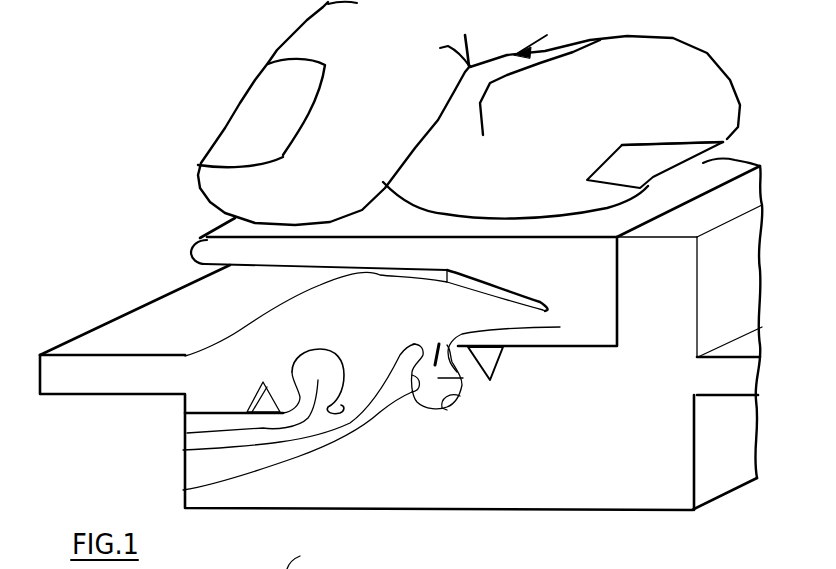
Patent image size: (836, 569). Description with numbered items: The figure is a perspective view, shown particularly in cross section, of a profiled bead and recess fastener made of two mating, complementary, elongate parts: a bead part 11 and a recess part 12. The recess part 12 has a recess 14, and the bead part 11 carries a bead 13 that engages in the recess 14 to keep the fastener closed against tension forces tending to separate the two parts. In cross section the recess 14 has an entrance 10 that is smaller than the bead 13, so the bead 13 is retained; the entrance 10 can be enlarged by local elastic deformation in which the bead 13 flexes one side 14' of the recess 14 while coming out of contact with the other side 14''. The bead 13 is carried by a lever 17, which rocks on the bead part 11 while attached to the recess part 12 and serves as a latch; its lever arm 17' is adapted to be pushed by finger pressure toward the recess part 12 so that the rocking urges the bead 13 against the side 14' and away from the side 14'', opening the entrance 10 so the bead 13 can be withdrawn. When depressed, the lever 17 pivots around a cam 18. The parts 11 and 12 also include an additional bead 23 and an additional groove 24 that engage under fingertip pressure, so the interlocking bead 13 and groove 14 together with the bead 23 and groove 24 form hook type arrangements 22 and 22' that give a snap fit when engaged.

The entrance 10 is at (433, 365).
The bead part 11 is at (295, 313).
The recess part 12 is at (563, 497).
The bead 13 is at (463, 378).
The recess 14 is at (594, 452).
The one side of the recess 14' is at (617, 281).
The other side of the recess 14'' is at (264, 452).
The lever 17 is at (376, 220).
The lever arm 17' is at (159, 210).
The cam 18 is at (333, 288).
The hook type arrangement 22 is at (461, 285).
The hook type arrangement 22' is at (262, 410).
The additional bead 23 is at (187, 433).
The additional groove 24 is at (293, 367).